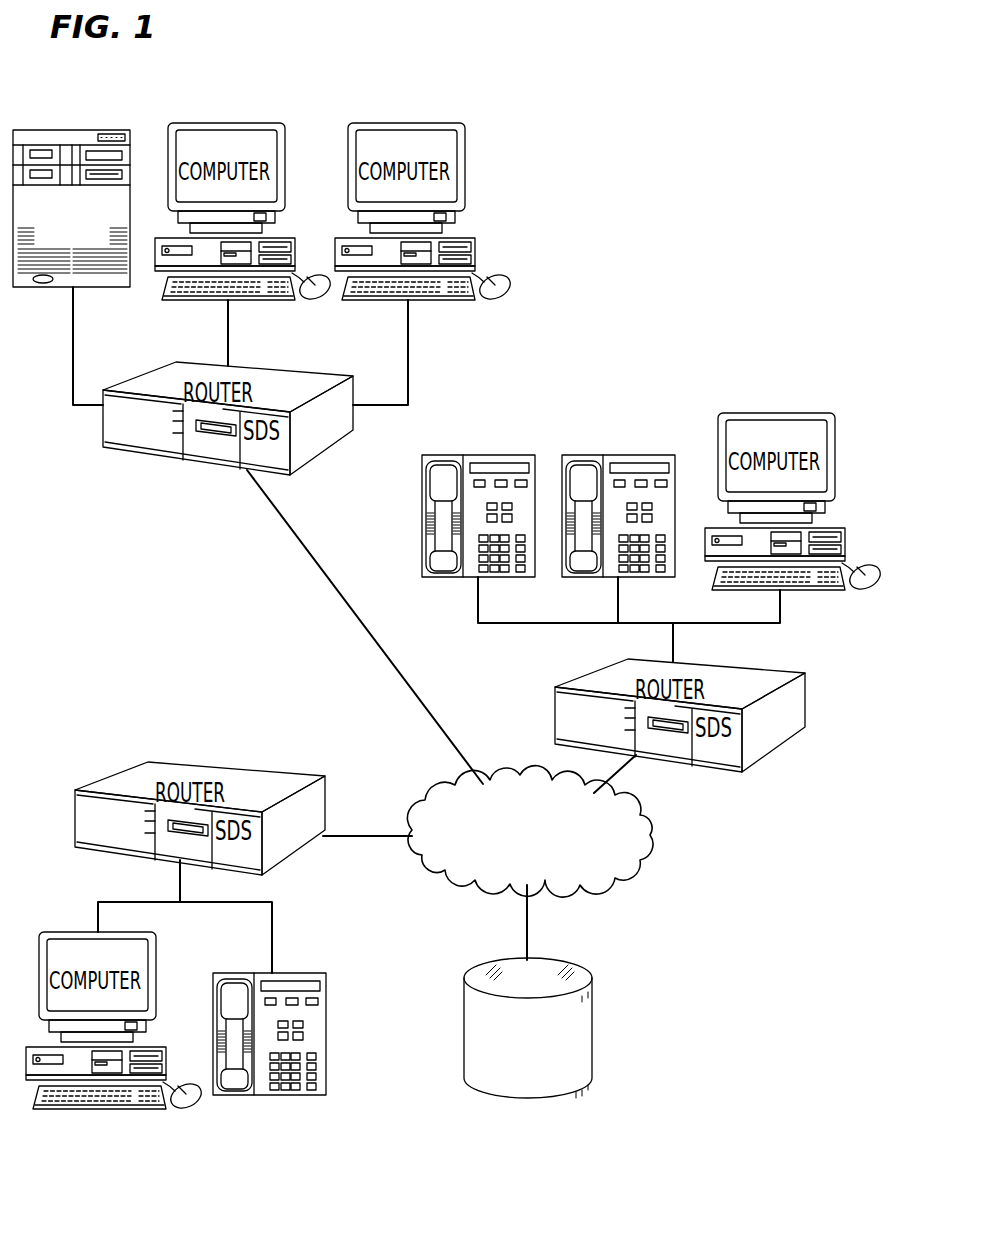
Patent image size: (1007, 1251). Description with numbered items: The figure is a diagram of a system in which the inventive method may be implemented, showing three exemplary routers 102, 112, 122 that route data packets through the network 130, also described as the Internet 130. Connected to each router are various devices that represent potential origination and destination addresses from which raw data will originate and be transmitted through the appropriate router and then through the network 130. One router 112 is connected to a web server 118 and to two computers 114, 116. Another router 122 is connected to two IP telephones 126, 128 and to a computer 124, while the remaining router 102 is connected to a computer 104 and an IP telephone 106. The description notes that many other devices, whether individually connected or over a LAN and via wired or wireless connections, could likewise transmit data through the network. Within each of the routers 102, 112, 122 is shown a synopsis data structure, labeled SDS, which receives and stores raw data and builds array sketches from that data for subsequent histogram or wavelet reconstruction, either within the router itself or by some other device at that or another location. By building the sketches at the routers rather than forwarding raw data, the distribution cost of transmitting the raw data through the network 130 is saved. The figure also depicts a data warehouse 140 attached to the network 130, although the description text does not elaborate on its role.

The router 102 is at (190, 762).
The computer 104 is at (312, 973).
The IP telephone 106 is at (50, 932).
The router 112 is at (140, 448).
The computer 114 is at (407, 123).
The computer 116 is at (238, 123).
The web server 118 is at (77, 133).
The router 122 is at (775, 733).
The computer 124 is at (787, 413).
The IP telephone 126 is at (532, 455).
The IP telephone 128 is at (670, 455).
The network 130 is at (438, 802).
The data warehouse 140 is at (518, 1097).